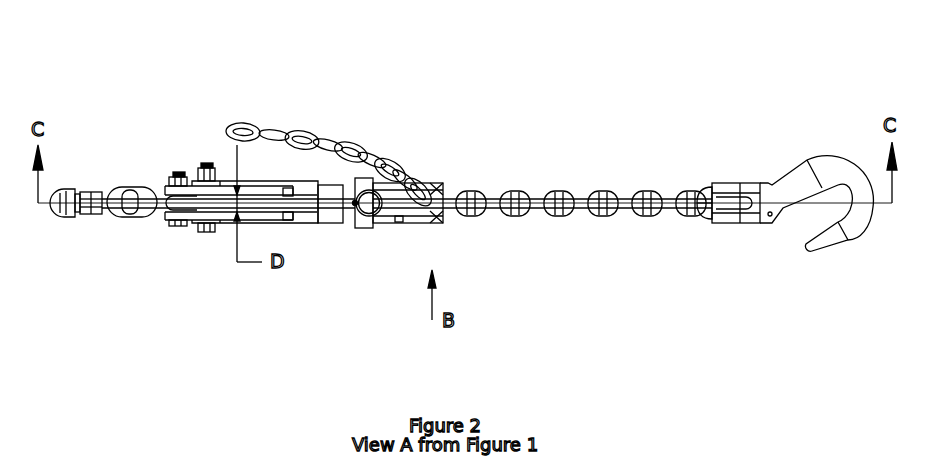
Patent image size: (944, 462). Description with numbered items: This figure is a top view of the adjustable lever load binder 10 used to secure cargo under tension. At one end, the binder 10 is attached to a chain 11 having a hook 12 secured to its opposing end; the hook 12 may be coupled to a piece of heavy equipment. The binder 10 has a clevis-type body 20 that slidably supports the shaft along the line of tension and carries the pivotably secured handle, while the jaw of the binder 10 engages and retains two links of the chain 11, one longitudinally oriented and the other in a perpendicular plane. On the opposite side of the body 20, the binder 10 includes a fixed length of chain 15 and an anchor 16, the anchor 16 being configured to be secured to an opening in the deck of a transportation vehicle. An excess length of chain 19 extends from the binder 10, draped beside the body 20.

The adjustable lever load binder 10 is at (494, 72).
The chain 11 is at (617, 193).
The hook 12 is at (829, 163).
The chain 15 is at (131, 213).
The anchor 16 is at (63, 218).
The excess length of chain 19 is at (290, 125).
The clevis-type body 20 is at (337, 224).